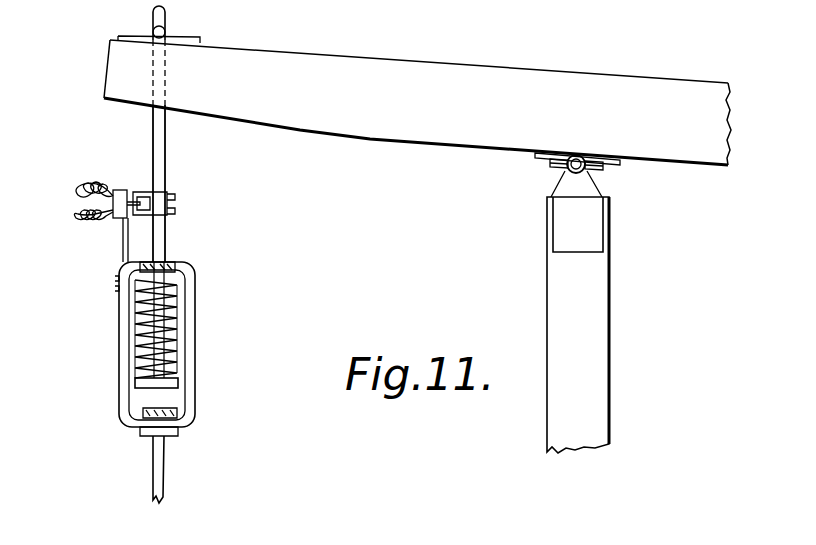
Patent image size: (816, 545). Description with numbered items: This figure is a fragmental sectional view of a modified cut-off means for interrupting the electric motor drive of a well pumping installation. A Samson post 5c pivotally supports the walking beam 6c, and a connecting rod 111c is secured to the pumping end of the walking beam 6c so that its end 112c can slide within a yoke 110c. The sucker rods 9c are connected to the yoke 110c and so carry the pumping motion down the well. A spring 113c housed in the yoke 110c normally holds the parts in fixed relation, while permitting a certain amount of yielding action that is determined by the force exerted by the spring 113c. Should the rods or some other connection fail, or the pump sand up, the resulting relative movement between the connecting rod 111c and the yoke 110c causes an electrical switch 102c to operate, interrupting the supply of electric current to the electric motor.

The walking beam 6c is at (488, 78).
The Samson post 5c is at (556, 273).
The connecting rod 111c is at (159, 160).
The electrical switch 102c is at (118, 190).
The yoke 110c is at (190, 356).
The spring 113c is at (172, 313).
The end of connecting rod 112c is at (143, 376).
The sucker rods 9c is at (158, 470).